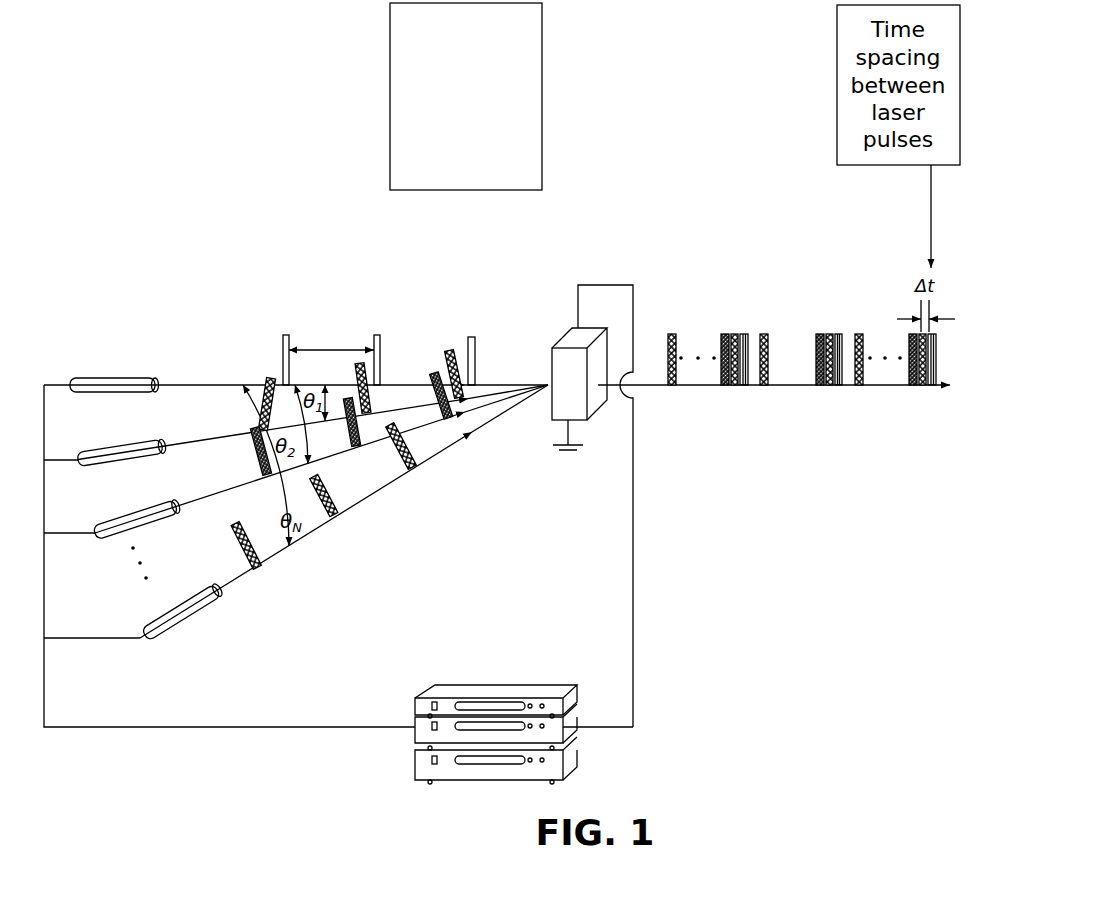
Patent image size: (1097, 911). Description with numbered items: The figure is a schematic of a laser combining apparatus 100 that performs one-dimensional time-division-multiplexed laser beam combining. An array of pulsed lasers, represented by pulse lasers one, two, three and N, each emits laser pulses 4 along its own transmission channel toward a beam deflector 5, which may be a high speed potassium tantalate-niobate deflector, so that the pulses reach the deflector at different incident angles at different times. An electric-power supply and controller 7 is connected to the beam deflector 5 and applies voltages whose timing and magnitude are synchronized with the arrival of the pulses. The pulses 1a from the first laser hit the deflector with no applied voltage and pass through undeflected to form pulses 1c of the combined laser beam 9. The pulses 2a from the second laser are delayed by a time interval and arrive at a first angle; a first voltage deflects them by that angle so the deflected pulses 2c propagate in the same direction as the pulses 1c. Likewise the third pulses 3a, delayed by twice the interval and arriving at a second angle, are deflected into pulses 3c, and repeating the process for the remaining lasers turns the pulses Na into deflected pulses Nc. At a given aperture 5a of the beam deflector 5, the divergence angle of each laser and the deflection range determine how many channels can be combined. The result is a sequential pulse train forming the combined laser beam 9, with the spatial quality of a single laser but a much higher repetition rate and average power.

The laser combining apparatus 100 is at (258, 278).
The pulses from the first pulse laser 1a is at (215, 385).
The pulses from the second pulsed laser 2a is at (182, 445).
The third pulse of the third laser 3a is at (213, 500).
The laser pulses from the Nth laser element Na is at (272, 563).
The laser pulses 4 is at (471, 335).
The beam deflector 5 is at (568, 328).
The aperture of the beam deflector 5a is at (548, 377).
The electric-power supply and controller 7 is at (415, 735).
The combined laser beam 9 is at (672, 290).
The pulses of the first laser in the combined beam 1c is at (744, 334).
The deflected pulses of the second pulsed laser 2c is at (734, 334).
The deflected pulses of the third laser 3c is at (722, 340).
The deflected pulses of the Nth laser Nc is at (672, 390).